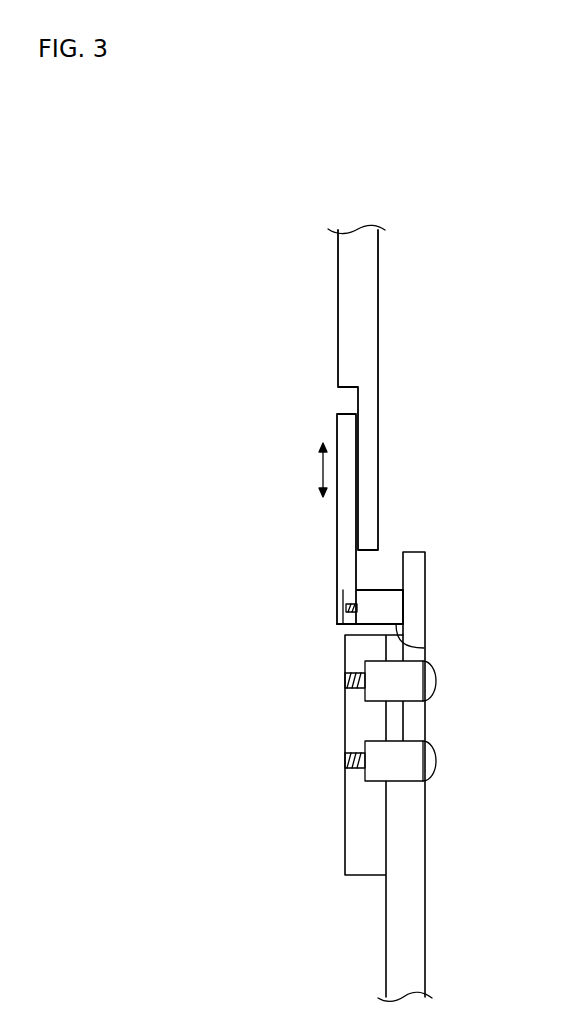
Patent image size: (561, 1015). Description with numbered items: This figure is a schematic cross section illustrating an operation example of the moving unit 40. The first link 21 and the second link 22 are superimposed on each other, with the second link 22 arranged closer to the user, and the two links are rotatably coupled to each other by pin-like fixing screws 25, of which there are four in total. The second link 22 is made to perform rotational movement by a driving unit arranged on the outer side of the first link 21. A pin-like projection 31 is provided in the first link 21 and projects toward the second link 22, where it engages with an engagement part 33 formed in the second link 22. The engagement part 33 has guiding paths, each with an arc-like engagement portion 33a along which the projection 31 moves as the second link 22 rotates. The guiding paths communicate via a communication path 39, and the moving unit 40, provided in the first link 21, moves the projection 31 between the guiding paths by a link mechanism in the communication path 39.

The first link 21 is at (380, 272).
The second link 22 is at (427, 906).
The fixing screw 25 is at (449, 681).
The projection 31 is at (385, 607).
The engagement part 33 is at (392, 505).
The engagement portion 33a is at (416, 648).
The communication path 39 is at (396, 557).
The moving unit 40 is at (316, 559).